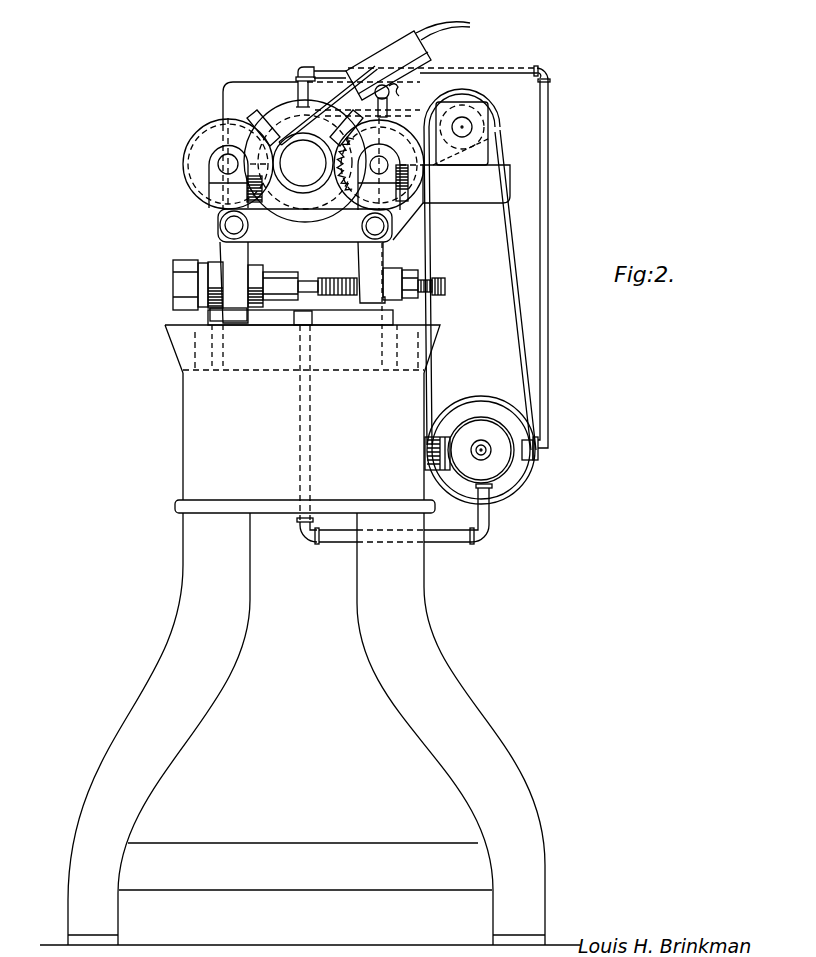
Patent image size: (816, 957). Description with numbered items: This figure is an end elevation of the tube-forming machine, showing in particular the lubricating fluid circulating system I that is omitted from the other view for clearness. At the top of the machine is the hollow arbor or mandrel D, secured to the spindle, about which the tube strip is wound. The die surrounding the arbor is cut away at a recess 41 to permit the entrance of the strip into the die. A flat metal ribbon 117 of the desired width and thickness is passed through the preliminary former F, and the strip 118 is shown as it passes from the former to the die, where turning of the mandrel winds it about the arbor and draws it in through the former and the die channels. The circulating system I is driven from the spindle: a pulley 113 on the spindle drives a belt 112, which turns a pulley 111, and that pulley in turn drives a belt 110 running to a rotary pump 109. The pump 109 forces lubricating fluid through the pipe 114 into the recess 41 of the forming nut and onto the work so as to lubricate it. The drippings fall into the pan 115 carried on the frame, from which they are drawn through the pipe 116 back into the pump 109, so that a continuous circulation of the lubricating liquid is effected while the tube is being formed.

The recess 41 is at (289, 126).
The strip 118 is at (315, 107).
The pulley 113 is at (328, 132).
The preliminary former F is at (380, 58).
The flat metal ribbon 117 is at (447, 29).
The belt 112 is at (397, 112).
The pulley 111 is at (496, 120).
The pipe 114 is at (547, 174).
The belt 110 is at (514, 273).
The pan 115 is at (302, 349).
The pipe 116 is at (308, 483).
The rotary pump 109 is at (497, 468).
The hollow arbor or mandrel D is at (306, 182).
The circulating system I is at (480, 438).